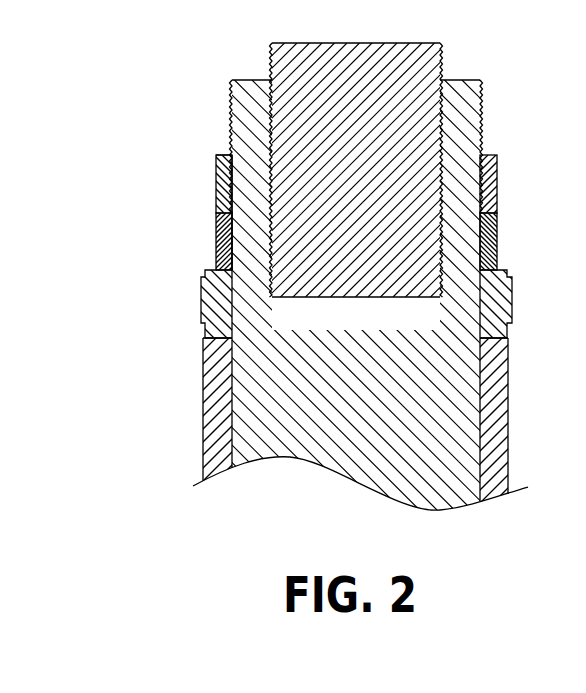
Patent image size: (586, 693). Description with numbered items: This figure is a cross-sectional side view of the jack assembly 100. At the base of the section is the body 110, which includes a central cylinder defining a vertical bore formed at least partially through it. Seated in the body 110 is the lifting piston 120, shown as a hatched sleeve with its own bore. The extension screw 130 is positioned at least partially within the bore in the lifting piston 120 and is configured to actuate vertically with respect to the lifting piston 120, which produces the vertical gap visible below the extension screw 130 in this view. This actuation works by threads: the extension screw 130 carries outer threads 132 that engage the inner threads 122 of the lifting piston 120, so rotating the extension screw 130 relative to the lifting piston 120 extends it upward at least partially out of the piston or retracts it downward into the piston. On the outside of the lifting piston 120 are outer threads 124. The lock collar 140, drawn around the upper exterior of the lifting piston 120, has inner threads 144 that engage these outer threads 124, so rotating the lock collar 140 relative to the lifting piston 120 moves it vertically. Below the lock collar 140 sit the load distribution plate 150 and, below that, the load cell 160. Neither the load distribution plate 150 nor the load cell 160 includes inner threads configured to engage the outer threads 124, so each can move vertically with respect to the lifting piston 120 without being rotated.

The jack assembly 100 is at (116, 60).
The body 110 is at (509, 402).
The lifting piston 120 is at (293, 297).
The inner threads 122 is at (272, 99).
The outer threads 124 is at (228, 194).
The extension screw 130 is at (302, 165).
The outer threads 132 is at (313, 170).
The lock collar 140 is at (361, 184).
The inner threads 144 is at (200, 171).
The load distribution plate 150 is at (498, 247).
The load cell 160 is at (513, 312).